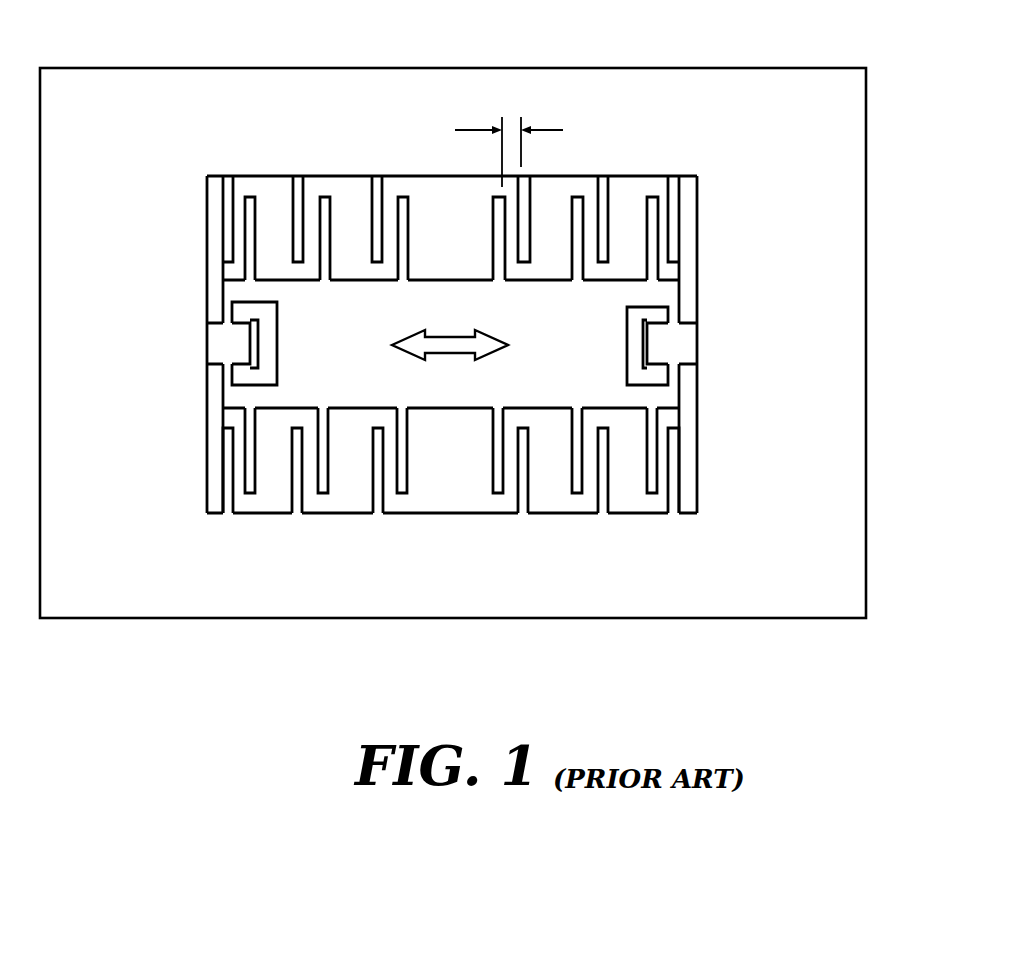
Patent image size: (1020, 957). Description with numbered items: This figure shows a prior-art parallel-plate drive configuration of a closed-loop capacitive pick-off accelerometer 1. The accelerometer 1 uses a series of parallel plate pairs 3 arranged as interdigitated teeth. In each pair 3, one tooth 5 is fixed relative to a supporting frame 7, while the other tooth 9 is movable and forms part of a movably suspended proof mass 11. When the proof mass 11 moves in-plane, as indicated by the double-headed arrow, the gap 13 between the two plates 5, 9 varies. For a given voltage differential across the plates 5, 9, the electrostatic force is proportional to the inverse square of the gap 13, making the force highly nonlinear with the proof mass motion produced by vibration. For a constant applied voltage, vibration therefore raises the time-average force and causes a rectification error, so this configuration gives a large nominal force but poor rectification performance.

The closed-loop capacitive pick-off accelerometer 1 is at (874, 49).
The parallel plate pair 3 is at (492, 194).
The fixed tooth 5 is at (531, 220).
The supporting frame 7 is at (791, 68).
The movable tooth 9 is at (492, 238).
The proof mass 11 is at (461, 322).
The gap 13 is at (508, 122).